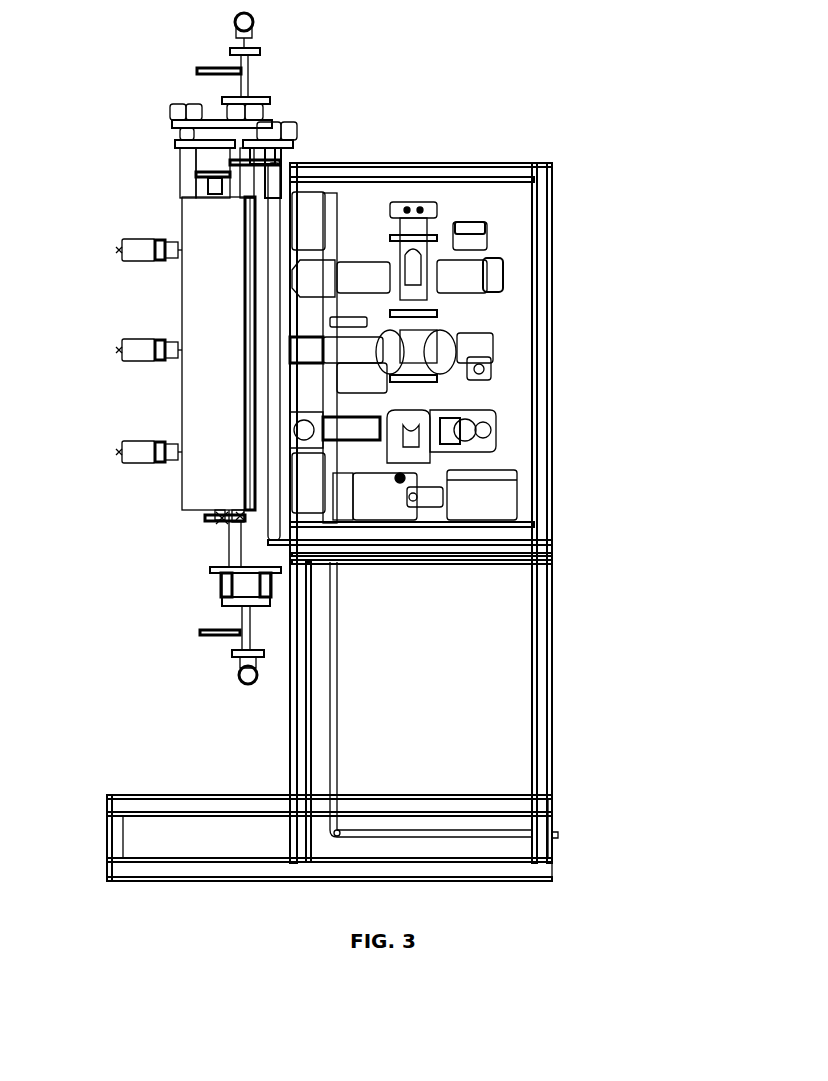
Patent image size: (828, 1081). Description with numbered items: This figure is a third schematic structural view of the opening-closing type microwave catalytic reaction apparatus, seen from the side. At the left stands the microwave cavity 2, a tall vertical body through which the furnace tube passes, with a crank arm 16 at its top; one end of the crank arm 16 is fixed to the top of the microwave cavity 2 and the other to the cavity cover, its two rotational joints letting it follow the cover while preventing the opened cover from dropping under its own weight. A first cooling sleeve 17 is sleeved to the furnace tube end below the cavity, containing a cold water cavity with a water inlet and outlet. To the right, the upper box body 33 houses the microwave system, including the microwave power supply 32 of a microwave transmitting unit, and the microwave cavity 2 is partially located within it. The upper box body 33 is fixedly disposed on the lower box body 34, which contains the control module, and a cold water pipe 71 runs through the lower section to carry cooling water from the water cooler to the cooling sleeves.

The microwave cavity 2 is at (217, 292).
The crank arm 16 is at (213, 129).
The first cooling sleeve 17 is at (242, 543).
The microwave power supply 32 is at (482, 495).
The upper box body 33 is at (543, 339).
The lower box body 34 is at (543, 697).
The cold water pipe 71 is at (332, 645).